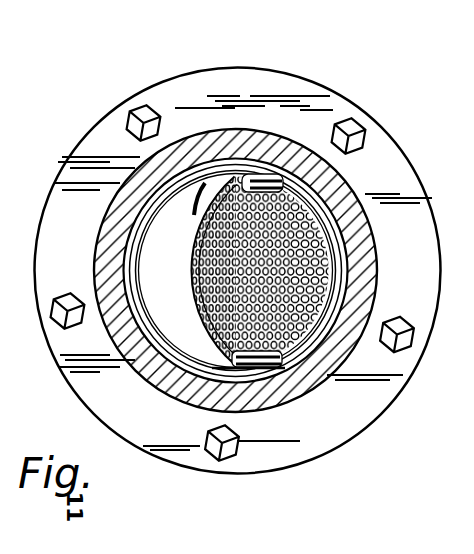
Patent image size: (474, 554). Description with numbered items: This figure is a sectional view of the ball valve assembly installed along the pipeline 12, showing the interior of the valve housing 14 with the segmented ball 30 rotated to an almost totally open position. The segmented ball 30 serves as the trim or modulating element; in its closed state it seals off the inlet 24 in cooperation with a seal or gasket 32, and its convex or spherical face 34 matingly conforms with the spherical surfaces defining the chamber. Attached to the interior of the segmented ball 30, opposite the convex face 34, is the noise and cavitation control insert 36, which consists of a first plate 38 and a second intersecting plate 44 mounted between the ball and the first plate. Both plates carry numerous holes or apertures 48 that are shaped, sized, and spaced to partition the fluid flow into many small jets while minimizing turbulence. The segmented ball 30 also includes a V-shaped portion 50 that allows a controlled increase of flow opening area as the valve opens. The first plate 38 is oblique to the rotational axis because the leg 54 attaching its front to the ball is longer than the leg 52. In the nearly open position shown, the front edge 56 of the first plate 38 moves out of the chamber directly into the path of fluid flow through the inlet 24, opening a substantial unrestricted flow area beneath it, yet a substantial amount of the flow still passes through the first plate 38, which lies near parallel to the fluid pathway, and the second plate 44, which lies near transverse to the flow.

The pipeline 12 is at (373, 192).
The valve housing 14 is at (405, 143).
The inlet 24 is at (350, 350).
The segmented ball 30 is at (316, 358).
The seal or gasket 32 is at (264, 376).
The convex or spherical face 34 is at (292, 368).
The noise and cavitation control insert 36 is at (176, 337).
The first plate 38 is at (198, 222).
The second intersecting plate 44 is at (296, 158).
The holes or apertures 48 is at (193, 330).
The V-shaped portion 50 is at (232, 256).
The leg 52 is at (272, 177).
The leg 54 is at (238, 366).
The front edge 56 is at (193, 203).